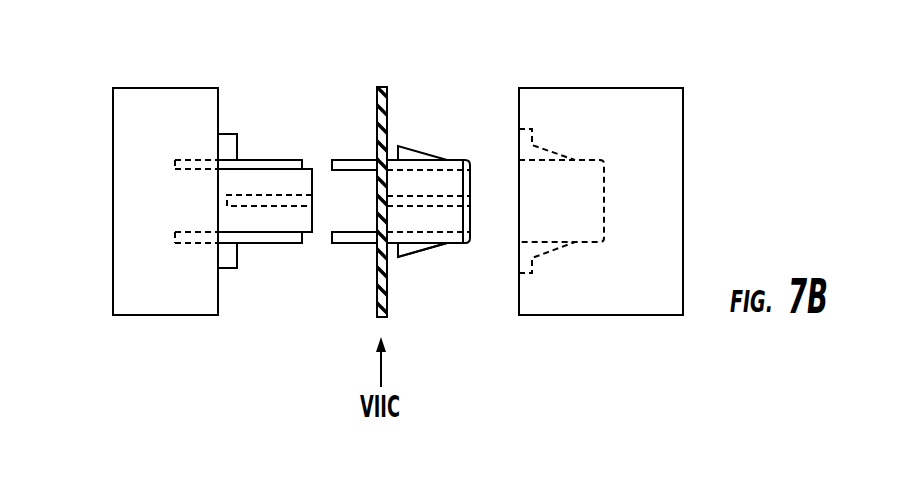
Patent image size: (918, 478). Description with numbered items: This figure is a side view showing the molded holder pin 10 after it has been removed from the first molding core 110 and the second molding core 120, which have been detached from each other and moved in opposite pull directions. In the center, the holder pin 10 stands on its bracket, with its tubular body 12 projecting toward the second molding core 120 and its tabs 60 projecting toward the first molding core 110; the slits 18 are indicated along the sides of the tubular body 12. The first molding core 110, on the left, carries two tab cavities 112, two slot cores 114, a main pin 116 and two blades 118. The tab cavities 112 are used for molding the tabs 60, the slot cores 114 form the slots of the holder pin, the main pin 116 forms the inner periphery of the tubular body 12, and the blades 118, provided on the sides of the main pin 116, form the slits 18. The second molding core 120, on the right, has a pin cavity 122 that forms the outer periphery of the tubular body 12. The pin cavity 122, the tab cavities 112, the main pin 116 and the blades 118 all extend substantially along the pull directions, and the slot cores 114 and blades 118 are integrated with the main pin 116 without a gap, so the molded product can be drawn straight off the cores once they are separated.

The holder pin 10 is at (468, 246).
The tubular body 12 is at (448, 166).
The slits 18 is at (413, 237).
The tabs 60 is at (353, 237).
The first molding core 110 is at (190, 103).
The tab cavities 112 is at (172, 165).
The slot cores 114 is at (230, 145).
The main pin 116 is at (227, 198).
The blades 118 is at (273, 165).
The second molding core 120 is at (655, 124).
The pin cavity 122 is at (574, 202).